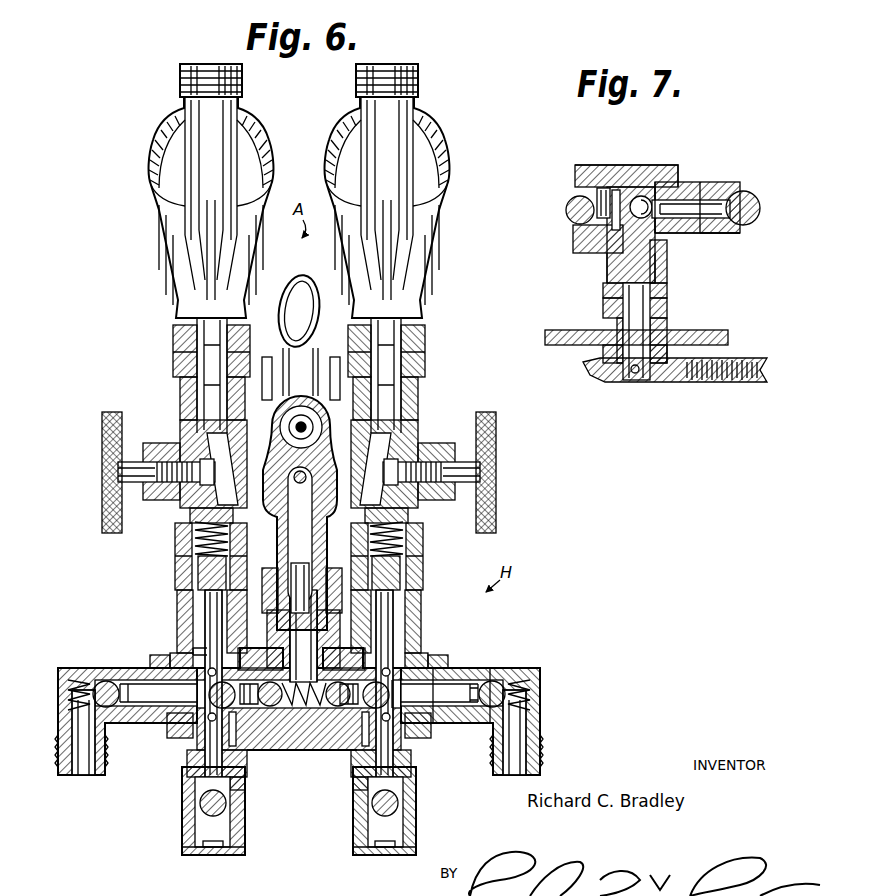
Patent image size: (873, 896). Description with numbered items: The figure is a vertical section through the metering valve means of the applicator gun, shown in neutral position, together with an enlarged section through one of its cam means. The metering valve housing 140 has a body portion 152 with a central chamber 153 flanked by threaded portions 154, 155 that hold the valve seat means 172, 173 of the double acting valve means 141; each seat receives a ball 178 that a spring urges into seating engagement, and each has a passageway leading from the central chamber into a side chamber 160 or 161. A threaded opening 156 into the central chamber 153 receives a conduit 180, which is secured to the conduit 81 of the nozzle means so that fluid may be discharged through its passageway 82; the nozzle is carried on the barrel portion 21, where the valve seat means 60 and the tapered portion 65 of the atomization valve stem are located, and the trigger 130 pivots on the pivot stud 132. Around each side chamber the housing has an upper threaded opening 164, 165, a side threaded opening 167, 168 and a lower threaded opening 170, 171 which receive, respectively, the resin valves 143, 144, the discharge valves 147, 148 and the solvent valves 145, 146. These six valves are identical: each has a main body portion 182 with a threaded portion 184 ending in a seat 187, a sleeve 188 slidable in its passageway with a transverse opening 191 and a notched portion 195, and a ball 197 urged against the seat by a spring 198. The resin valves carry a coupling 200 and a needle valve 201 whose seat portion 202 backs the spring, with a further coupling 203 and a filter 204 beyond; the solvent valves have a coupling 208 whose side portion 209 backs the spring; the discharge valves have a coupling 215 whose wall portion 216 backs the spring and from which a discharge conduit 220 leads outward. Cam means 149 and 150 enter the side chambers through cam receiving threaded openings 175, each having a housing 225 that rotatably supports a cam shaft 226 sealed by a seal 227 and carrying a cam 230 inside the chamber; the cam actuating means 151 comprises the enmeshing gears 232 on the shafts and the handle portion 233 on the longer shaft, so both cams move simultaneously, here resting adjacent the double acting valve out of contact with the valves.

In FIG. 6, the barrel portion 21 is at (313, 380).
In FIG. 6, the valve seat means 60 is at (305, 405).
In FIG. 6, the tapered portion 65 is at (306, 427).
In FIG. 6, the conduit 81 is at (327, 519).
In FIG. 6, the passageway 82 is at (308, 547).
In FIG. 6, the trigger 130 is at (266, 356).
In FIG. 6, the pivot stud 132 is at (335, 356).
In FIG. 6, the housing 140 is at (300, 745).
In FIG. 6, the double acting valve means 141 is at (323, 750).
In FIG. 7, the double acting valve means 141 is at (555, 188).
In FIG. 6, the resin valve 143 is at (170, 607).
In FIG. 6, the resin valve 144 is at (426, 607).
In FIG. 6, the solvent valve 145 is at (166, 841).
In FIG. 6, the solvent valve 146 is at (361, 850).
In FIG. 6, the discharge valve 147 is at (96, 636).
In FIG. 6, the discharge valve 148 is at (532, 640).
In FIG. 7, the discharge valve 148 is at (732, 150).
In FIG. 6, the cam means 149 is at (208, 706).
In FIG. 6, the cam means 150 is at (395, 710).
In FIG. 7, the cam means 150 is at (588, 269).
In FIG. 7, the cam actuating means 151 is at (568, 363).
In FIG. 6, the body portion 152 is at (418, 745).
In FIG. 7, the body portion 152 is at (670, 188).
In FIG. 6, the central chamber 153 is at (308, 712).
In FIG. 7, the central chamber 153 is at (573, 235).
In FIG. 6, the threaded portion 154 is at (260, 660).
In FIG. 6, the threaded portion 155 is at (340, 660).
In FIG. 7, the threaded portion 155 is at (615, 168).
In FIG. 6, the threaded opening 156 is at (303, 660).
In FIG. 6, the chamber 160 is at (175, 650).
In FIG. 6, the chamber 161 is at (438, 668).
In FIG. 7, the chamber 161 is at (640, 186).
In FIG. 6, the upper threaded opening 164 is at (180, 630).
In FIG. 6, the upper threaded opening 165 is at (415, 652).
In FIG. 6, the threaded opening 167 is at (170, 658).
In FIG. 6, the threaded opening 168 is at (448, 672).
In FIG. 7, the threaded opening 168 is at (688, 190).
In FIG. 6, the lower threaded opening 170 is at (190, 750).
In FIG. 6, the lower threaded opening 171 is at (410, 760).
In FIG. 6, the valve seat means 172 is at (236, 735).
In FIG. 6, the valve seat means 173 is at (362, 735).
In FIG. 7, the cam receiving threaded opening 175 is at (667, 262).
In FIG. 7, the ball 178 is at (566, 212).
In FIG. 6, the conduit 180 is at (300, 600).
In FIG. 6, the main body portion 182 is at (192, 572).
In FIG. 7, the main body portion 182 is at (700, 190).
In FIG. 7, the threaded portion 184 is at (720, 233).
In FIG. 6, the seat 187 is at (228, 803).
In FIG. 6, the sleeve 188 is at (170, 728).
In FIG. 7, the sleeve 188 is at (730, 200).
In FIG. 6, the opening 191 is at (408, 692).
In FIG. 7, the opening 191 is at (660, 212).
In FIG. 6, the notched portion 195 is at (372, 803).
In FIG. 6, the ball 197 is at (505, 680).
In FIG. 7, the ball 197 is at (762, 208).
In FIG. 6, the spring 198 is at (197, 537).
In FIG. 6, the coupling 200 is at (182, 555).
In FIG. 6, the needle valve 201 is at (202, 446).
In FIG. 6, the seat portion 202 is at (190, 515).
In FIG. 6, the coupling 203 is at (173, 352).
In FIG. 6, the filter 204 is at (172, 240).
In FIG. 6, the coupling 208 is at (185, 855).
In FIG. 6, the side portion 209 is at (220, 848).
In FIG. 6, the coupling 215 is at (60, 700).
In FIG. 6, the wall portion 216 is at (92, 691).
In FIG. 6, the discharge conduit 220 is at (62, 760).
In FIG. 7, the housing 225 is at (610, 282).
In FIG. 7, the cam shaft 226 is at (667, 288).
In FIG. 7, the seal 227 is at (668, 308).
In FIG. 7, the cam 230 is at (617, 192).
In FIG. 7, the gear 232 is at (720, 332).
In FIG. 7, the handle portion 233 is at (718, 383).